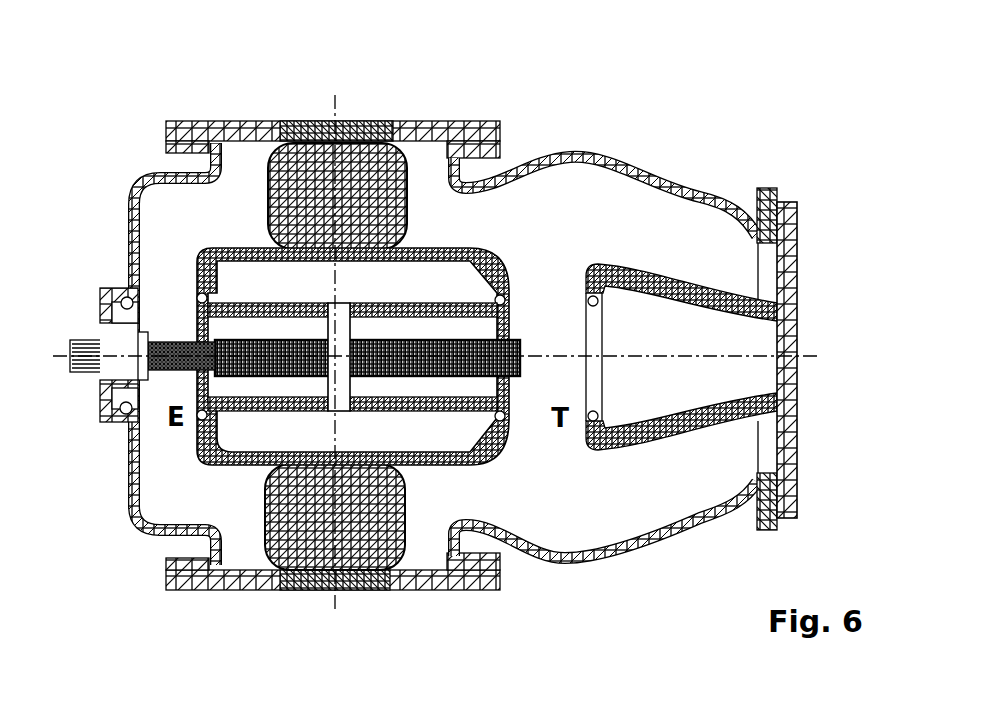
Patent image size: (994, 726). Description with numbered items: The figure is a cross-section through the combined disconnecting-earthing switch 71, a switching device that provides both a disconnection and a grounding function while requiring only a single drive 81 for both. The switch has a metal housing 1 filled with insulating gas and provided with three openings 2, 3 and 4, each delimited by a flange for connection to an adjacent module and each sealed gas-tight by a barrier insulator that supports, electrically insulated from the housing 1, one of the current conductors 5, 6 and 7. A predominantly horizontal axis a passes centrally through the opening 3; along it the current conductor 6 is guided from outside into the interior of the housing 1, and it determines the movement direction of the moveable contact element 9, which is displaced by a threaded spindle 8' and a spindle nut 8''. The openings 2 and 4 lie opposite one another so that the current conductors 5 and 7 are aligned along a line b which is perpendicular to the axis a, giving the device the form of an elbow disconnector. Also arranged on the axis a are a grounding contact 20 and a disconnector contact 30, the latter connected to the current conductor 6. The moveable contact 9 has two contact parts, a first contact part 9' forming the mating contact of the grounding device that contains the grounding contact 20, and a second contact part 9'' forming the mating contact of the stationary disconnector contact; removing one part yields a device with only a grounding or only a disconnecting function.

The metal housing 1 is at (632, 555).
The opening 2 is at (248, 558).
The opening 3 is at (767, 445).
The opening 4 is at (423, 160).
The current conductor 5 is at (308, 592).
The current conductor 6 is at (797, 313).
The current conductor 7 is at (373, 130).
The threaded spindle 8' is at (385, 517).
The spindle nut 8'' is at (389, 499).
The contact element 9 is at (317, 408).
The first contact part 9' is at (268, 218).
The second contact part 9'' is at (458, 218).
The grounding contact 20 is at (123, 288).
The disconnector contact 30 is at (642, 272).
The combined disconnecting-earthing switch 71 is at (304, 360).
The drive 81 is at (87, 370).
The horizontal axis a is at (731, 356).
The line b is at (337, 107).